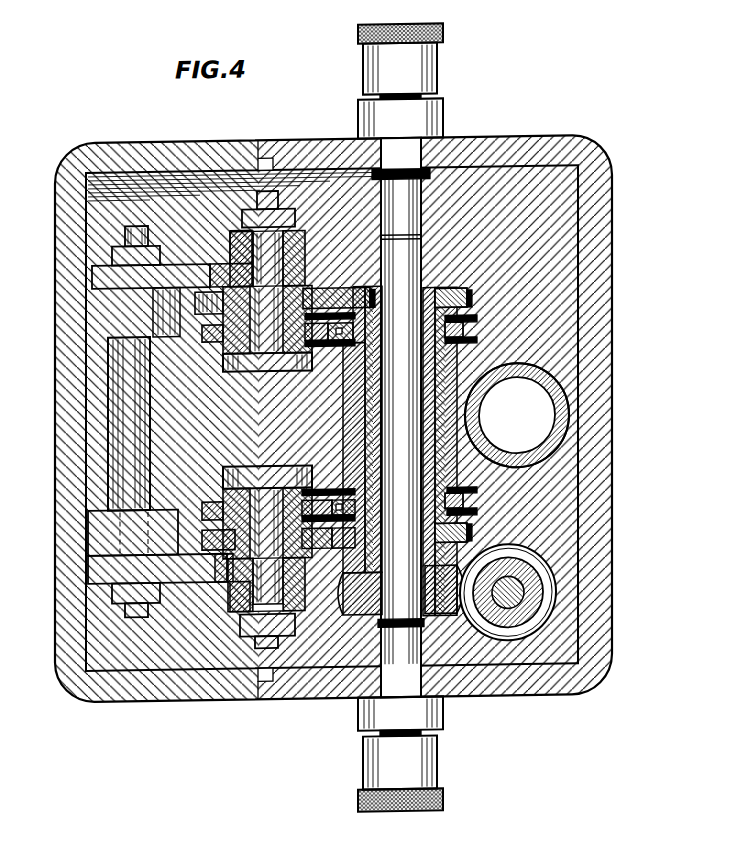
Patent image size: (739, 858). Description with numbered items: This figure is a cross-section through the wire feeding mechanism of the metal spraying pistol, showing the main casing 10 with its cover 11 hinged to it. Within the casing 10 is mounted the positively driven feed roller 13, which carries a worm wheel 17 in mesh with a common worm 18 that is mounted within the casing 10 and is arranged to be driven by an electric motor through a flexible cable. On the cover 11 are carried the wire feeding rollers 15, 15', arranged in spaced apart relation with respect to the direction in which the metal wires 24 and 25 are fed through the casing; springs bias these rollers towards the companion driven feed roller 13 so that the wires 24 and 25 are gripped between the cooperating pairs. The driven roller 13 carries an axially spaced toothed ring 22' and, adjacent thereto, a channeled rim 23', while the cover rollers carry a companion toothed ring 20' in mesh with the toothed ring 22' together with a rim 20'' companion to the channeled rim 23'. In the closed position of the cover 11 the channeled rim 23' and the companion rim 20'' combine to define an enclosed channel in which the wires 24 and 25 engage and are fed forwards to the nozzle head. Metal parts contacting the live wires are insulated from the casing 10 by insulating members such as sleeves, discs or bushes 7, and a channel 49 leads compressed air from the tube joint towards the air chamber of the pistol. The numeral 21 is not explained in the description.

The main casing 10 is at (599, 414).
The cover 11 is at (64, 523).
The feed roller 13 is at (425, 422).
The wire feeding roller 15 is at (267, 523).
The wire feeding roller 15' is at (266, 294).
The worm wheel 17 is at (441, 610).
The worm 18 is at (525, 615).
The toothed ring 20' is at (271, 430).
The rim 20'' is at (196, 406).
The spacer cylinder 21 is at (251, 473).
The toothed ring 22' is at (489, 397).
The channeled rim 23' is at (493, 399).
The metal wire 24 is at (332, 347).
The metal wire 25 is at (333, 488).
The channel 49 is at (537, 458).
The thin bar 7 is at (463, 320).